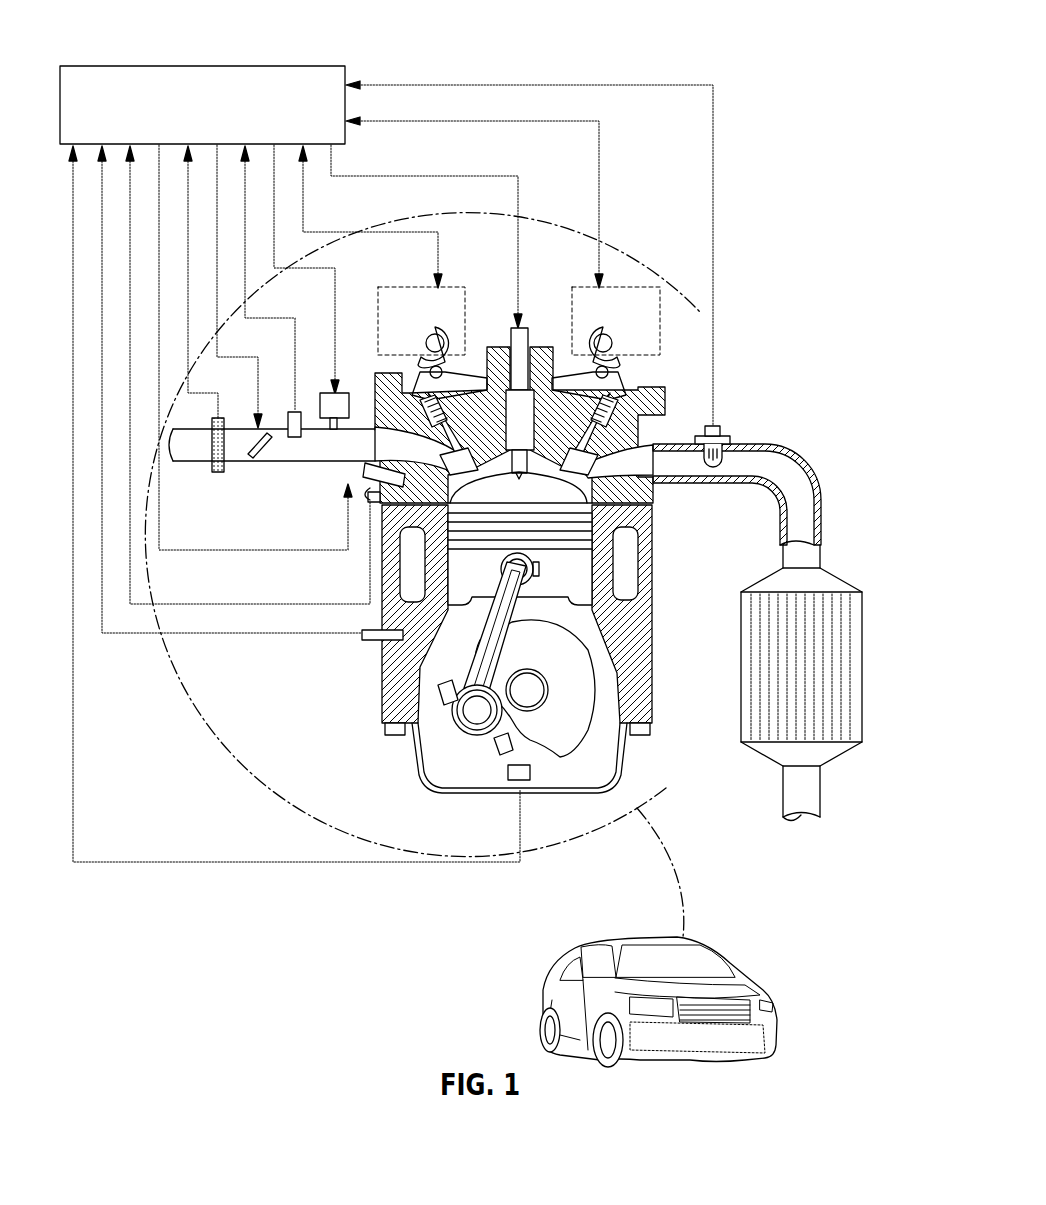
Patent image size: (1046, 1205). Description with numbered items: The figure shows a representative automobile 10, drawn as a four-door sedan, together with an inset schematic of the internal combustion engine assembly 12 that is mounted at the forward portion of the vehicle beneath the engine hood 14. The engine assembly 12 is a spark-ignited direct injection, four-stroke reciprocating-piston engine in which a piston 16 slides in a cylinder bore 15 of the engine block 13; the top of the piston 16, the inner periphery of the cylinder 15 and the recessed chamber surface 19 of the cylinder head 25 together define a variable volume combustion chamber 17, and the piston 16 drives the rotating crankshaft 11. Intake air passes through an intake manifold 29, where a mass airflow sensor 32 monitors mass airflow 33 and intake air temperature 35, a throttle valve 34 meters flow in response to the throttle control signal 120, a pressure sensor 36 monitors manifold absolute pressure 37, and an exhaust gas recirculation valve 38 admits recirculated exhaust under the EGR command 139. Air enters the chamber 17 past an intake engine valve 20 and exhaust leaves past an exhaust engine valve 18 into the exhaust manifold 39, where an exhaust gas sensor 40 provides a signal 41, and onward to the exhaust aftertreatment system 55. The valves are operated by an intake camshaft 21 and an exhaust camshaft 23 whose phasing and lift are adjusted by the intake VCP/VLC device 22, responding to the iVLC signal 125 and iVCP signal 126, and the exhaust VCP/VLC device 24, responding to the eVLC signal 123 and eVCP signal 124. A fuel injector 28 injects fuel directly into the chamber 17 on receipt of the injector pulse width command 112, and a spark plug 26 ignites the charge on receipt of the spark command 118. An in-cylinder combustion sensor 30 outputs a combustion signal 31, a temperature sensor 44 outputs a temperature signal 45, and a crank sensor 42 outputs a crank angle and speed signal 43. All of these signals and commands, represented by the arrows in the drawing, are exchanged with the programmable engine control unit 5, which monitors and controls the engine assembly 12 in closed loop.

The programmable engine control unit 5 is at (209, 118).
The automobile 10 is at (687, 958).
The crankshaft 11 is at (565, 735).
The internal combustion engine assembly 12 is at (168, 52).
The engine block 13 is at (635, 690).
The engine hood 14 is at (745, 990).
The cylinder bore 15 is at (592, 547).
The piston 16 is at (592, 566).
The combustion chamber 17 is at (504, 507).
The exhaust engine valve 18 is at (680, 480).
The recessed chamber surface 19 is at (652, 511).
The intake engine valve 20 is at (345, 457).
The intake camshaft 21 is at (420, 340).
The intake variable cam phasing/variable lift control device 22 is at (427, 320).
The exhaust camshaft 23 is at (618, 340).
The exhaust variable cam phasing/variable lift control device 24 is at (639, 320).
The cylinder head 25 is at (645, 425).
The spark plug 26 is at (524, 338).
The fuel injector 28 is at (363, 468).
The intake manifold 29 is at (388, 430).
The in-cylinder combustion sensor 30 is at (370, 500).
The combustion sensor signal 31 is at (248, 375).
The mass airflow sensor 32 is at (224, 472).
The mass airflow 33 is at (221, 282).
The throttle valve 34 is at (262, 458).
The intake air temperature 35 is at (221, 282).
The pressure sensor 36 is at (288, 420).
The manifold absolute pressure 37 is at (275, 278).
The exhaust gas recirculation valve 38 is at (322, 396).
The exhaust manifold 39 is at (680, 444).
The exhaust gas sensor 40 is at (725, 436).
The exhaust gas sensor signal 41 is at (529, 241).
The crank sensor 42 is at (530, 780).
The crank angle and/or speed signal 43 is at (294, 504).
The temperature sensor 44 is at (372, 640).
The temperature signal 45 is at (230, 390).
The exhaust aftertreatment system 55 is at (845, 588).
The injector pulse width command 112 is at (255, 347).
The spark command 118 is at (430, 236).
The electronic throttle control signal 120 is at (247, 286).
The exhaust variable lift control signal 123 is at (490, 189).
The exhaust variable cam phasing control signal 124 is at (490, 189).
The intake variable lift control signal 125 is at (370, 217).
The intake variable cam phasing control signal 126 is at (370, 217).
The EGR command 139 is at (326, 269).